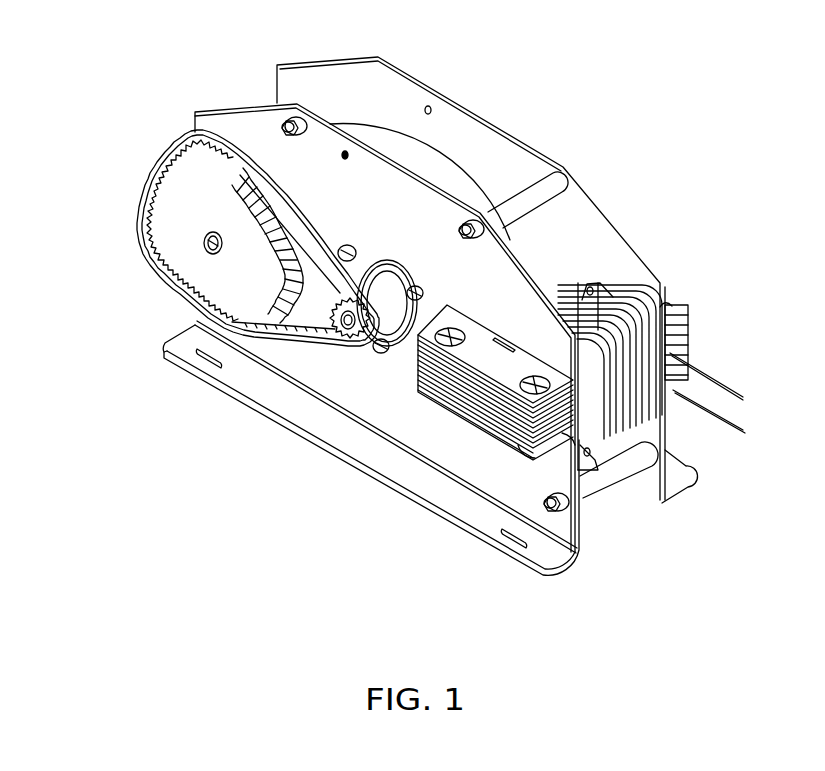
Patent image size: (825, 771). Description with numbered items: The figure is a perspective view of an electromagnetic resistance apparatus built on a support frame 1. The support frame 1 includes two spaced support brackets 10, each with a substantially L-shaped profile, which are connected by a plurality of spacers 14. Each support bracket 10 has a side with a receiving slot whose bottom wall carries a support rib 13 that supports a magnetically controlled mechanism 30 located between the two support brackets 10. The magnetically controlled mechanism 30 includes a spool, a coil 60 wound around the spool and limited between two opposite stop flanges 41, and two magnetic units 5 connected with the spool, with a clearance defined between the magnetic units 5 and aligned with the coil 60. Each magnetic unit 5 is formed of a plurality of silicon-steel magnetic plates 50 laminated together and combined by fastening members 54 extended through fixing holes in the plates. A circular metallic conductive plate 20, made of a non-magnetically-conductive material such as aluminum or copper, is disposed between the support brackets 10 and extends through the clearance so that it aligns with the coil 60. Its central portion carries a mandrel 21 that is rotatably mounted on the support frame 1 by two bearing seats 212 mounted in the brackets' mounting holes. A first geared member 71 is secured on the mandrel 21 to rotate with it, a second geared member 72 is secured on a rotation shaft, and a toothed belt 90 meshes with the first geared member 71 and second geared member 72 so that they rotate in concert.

The support frame 1 is at (560, 136).
The magnetic unit 5 is at (700, 328).
The support bracket 10 is at (563, 222).
The support rib 13 is at (566, 440).
The spacer 14 is at (355, 90).
The metallic conductive plate 20 is at (417, 157).
The mandrel 21 is at (312, 333).
The magnetically controlled mechanism 30 is at (720, 285).
The stop flange 41 is at (582, 422).
The magnetic plate 50 is at (492, 362).
The fastening member 54 is at (535, 392).
The coil 60 is at (648, 348).
The first geared member 71 is at (347, 322).
The second geared member 72 is at (167, 183).
The toothed belt 90 is at (215, 147).
The bearing seat 212 is at (370, 352).